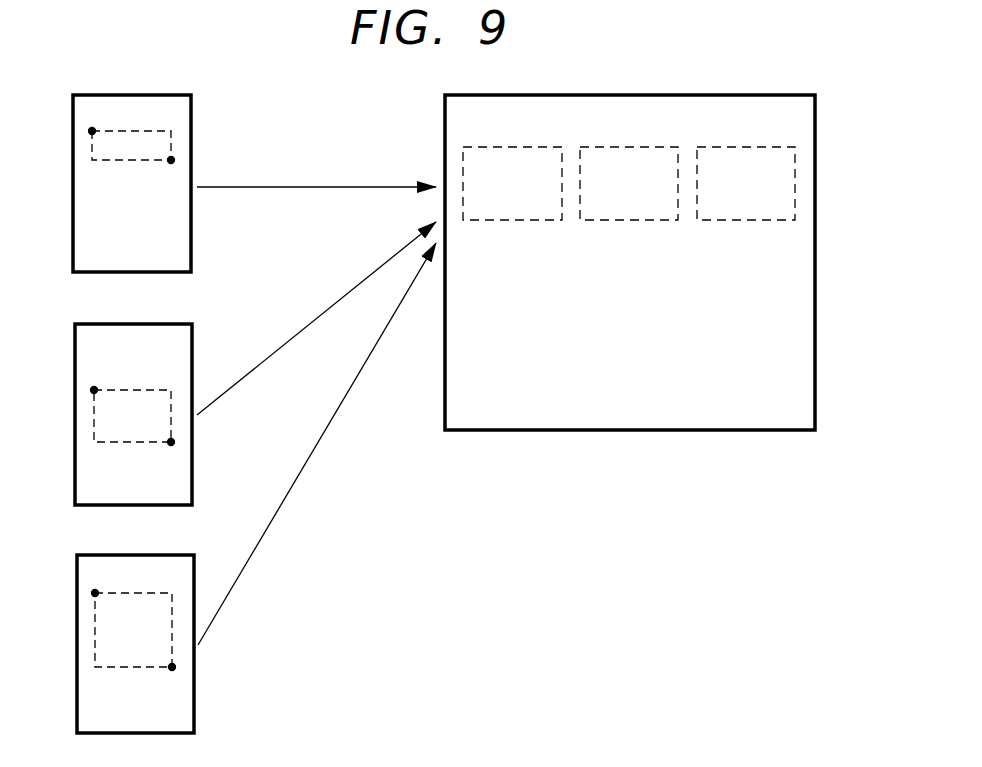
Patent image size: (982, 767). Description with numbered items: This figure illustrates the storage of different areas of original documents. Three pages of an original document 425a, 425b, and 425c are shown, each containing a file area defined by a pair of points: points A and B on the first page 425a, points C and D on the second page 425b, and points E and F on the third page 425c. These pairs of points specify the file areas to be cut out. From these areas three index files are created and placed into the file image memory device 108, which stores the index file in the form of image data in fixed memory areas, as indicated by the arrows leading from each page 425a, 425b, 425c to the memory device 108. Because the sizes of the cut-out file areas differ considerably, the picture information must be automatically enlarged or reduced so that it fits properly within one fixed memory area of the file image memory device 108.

The file image memory device 108 is at (830, 286).
The page of original document 425a is at (130, 74).
The page of original document 425b is at (132, 303).
The page of original document 425c is at (134, 533).